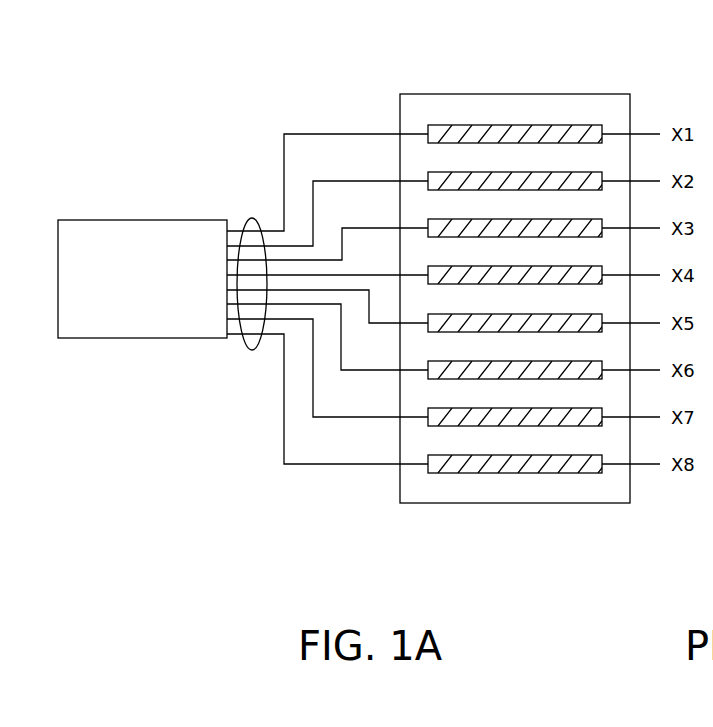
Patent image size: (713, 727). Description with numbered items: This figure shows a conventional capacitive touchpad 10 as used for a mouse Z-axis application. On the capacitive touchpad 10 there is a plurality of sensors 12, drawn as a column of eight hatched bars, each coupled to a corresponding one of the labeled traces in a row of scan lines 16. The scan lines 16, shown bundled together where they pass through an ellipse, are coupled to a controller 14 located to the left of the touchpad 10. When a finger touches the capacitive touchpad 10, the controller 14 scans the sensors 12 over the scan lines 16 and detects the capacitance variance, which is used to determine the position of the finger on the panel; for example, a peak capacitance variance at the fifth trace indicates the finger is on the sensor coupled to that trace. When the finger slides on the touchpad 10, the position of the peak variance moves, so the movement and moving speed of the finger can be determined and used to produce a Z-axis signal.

The capacitive touchpad 10 is at (515, 94).
The sensors 12 is at (582, 125).
The controller 14 is at (168, 220).
The scan lines 16 is at (250, 218).